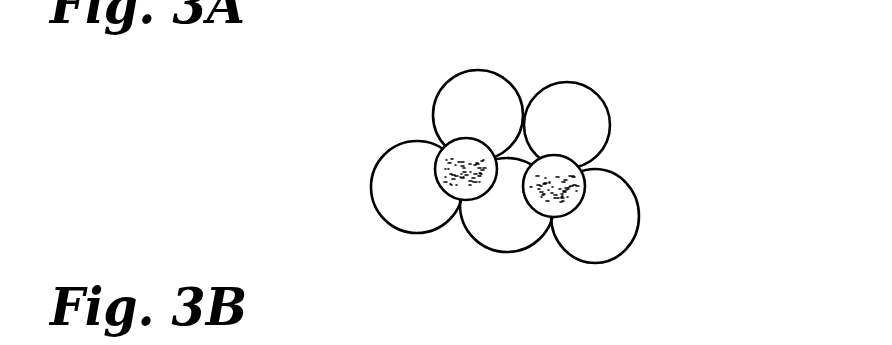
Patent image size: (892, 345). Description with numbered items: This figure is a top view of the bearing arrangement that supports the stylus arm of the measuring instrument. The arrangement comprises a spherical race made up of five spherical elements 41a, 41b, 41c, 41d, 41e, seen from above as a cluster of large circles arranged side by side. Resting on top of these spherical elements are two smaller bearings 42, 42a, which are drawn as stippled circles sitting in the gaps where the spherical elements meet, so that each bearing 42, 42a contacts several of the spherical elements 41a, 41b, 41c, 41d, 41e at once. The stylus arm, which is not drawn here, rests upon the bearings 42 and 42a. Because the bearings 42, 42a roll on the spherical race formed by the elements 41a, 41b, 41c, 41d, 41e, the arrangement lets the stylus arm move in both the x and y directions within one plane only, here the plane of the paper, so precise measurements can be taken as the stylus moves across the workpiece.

The spherical element 41a is at (397, 231).
The spherical element 41b is at (498, 255).
The spherical element 41c is at (633, 256).
The spherical element 41d is at (478, 64).
The spherical element 41e is at (584, 80).
The bearing 42 is at (442, 145).
The bearing 42a is at (582, 173).